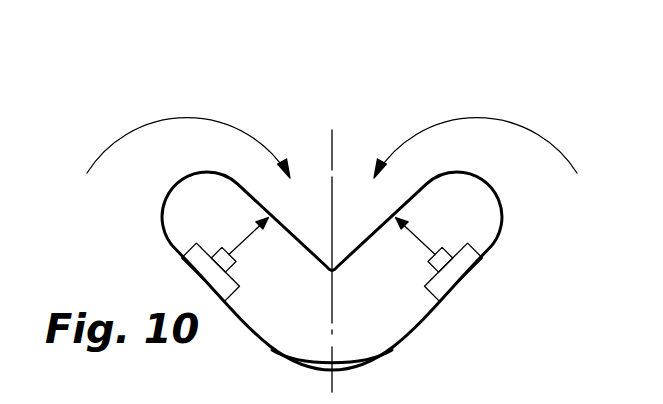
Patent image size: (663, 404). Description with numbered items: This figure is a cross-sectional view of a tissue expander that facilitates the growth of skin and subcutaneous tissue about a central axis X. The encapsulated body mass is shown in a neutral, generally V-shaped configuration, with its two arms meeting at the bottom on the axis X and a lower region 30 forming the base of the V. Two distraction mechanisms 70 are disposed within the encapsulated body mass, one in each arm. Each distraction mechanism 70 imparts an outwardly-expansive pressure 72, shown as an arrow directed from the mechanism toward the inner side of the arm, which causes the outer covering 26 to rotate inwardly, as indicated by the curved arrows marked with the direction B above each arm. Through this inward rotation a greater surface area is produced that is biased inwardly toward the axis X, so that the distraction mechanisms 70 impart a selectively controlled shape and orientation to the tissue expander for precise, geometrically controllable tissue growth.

The outer covering 26 is at (167, 203).
The bottom portion of support body 30 is at (387, 330).
The distraction mechanism 70 is at (205, 267).
The outwardly-expansive pressure 72 is at (243, 245).
The direction B is at (163, 118).
The central axis X is at (322, 117).